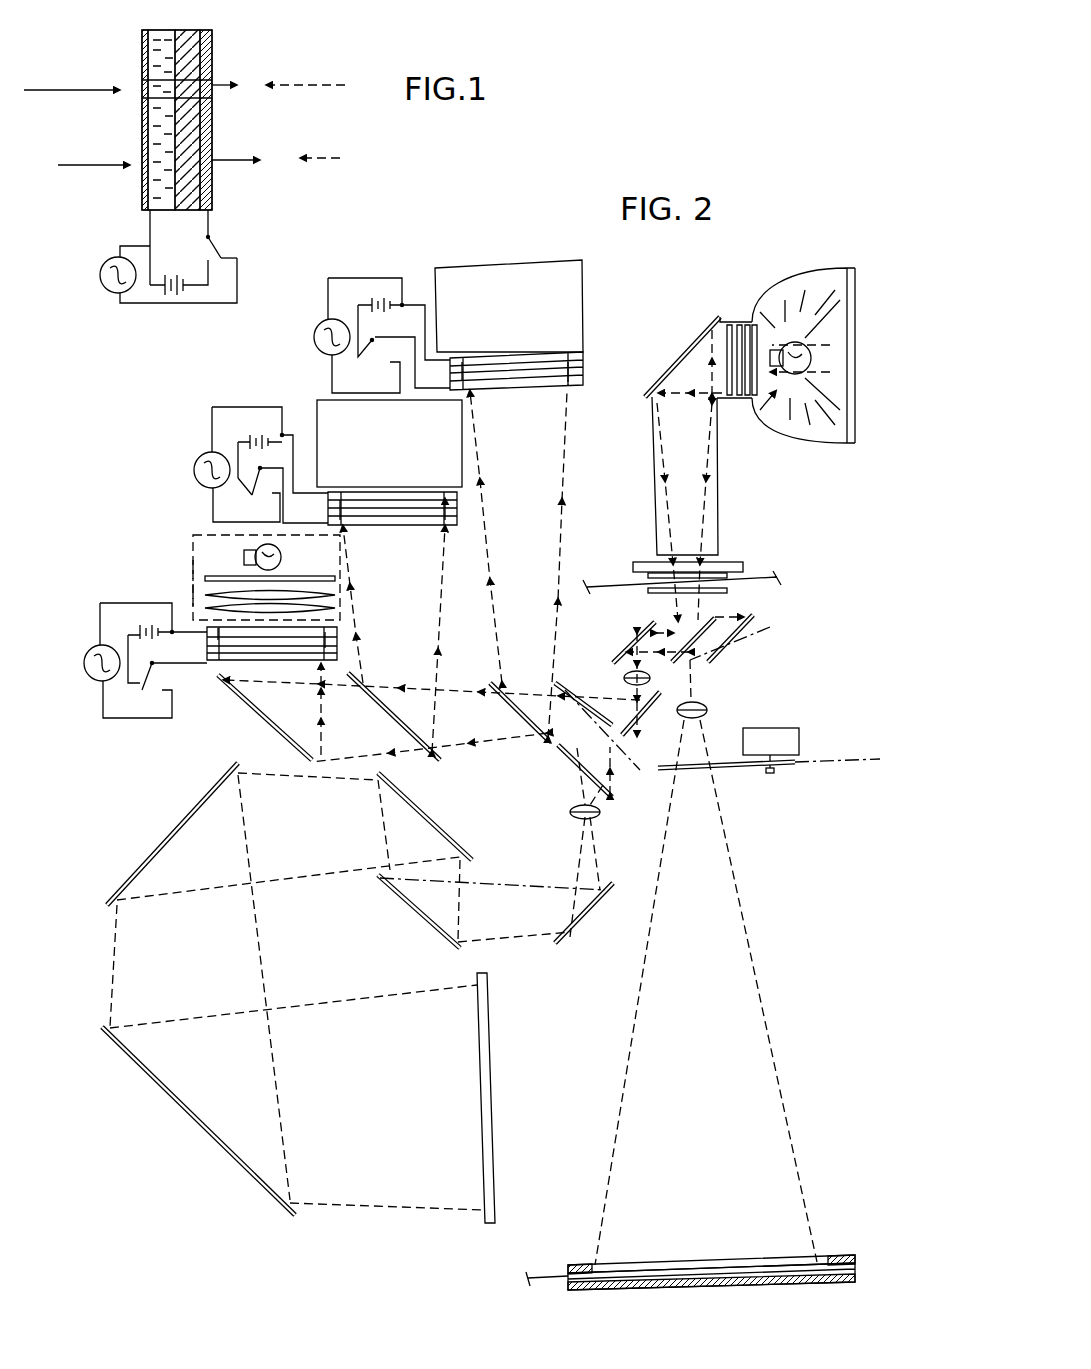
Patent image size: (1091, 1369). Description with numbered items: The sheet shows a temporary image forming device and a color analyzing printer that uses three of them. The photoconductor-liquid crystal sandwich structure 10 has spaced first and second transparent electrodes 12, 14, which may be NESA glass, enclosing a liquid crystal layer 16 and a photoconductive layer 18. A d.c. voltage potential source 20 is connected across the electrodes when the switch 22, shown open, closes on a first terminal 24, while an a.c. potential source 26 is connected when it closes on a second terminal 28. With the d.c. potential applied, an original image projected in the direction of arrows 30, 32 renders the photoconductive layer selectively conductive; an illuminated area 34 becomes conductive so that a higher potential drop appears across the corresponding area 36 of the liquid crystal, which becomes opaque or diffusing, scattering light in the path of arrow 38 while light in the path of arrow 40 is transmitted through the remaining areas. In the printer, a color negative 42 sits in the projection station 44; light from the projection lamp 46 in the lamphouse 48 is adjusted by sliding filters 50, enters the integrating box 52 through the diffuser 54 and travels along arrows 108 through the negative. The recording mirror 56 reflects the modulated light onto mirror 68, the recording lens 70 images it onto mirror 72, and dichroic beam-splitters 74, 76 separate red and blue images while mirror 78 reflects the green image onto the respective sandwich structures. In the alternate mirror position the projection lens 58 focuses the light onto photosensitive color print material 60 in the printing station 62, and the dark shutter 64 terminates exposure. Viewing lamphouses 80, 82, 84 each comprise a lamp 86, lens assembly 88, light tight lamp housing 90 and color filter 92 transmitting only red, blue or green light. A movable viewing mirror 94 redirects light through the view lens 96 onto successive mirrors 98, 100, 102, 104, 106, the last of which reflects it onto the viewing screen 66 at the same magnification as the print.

In FIG. 1, the photoconductor-liquid crystal sandwich structure 10 is at (199, 114).
In FIG. 2, the photoconductor-liquid crystal sandwich structure 10 is at (590, 370).
In FIG. 1, the first transparent electrode 12 is at (142, 44).
In FIG. 1, the second transparent electrode 14 is at (212, 40).
In FIG. 1, the liquid crystal layer 16 is at (148, 210).
In FIG. 1, the photoconductive layer 18 is at (206, 210).
In FIG. 1, the d.c. voltage potential source 20 is at (188, 270).
In FIG. 2, the d.c. voltage potential source 20 is at (372, 305).
In FIG. 1, the switch 22 is at (225, 255).
In FIG. 2, the switch 22 is at (376, 340).
In FIG. 1, the first terminal 24 is at (205, 245).
In FIG. 2, the first terminal 24 is at (345, 368).
In FIG. 1, the a.c. potential source 26 is at (100, 275).
In FIG. 2, the a.c. potential source 26 is at (314, 335).
In FIG. 1, the second terminal 28 is at (232, 262).
In FIG. 2, the second terminal 28 is at (385, 372).
In FIG. 1, the arrow 30 is at (330, 88).
In FIG. 1, the arrow 32 is at (335, 160).
In FIG. 1, the area 34 is at (212, 92).
In FIG. 1, the area 36 is at (142, 95).
In FIG. 1, the arrow 38 is at (48, 98).
In FIG. 1, the arrow 40 is at (85, 165).
In FIG. 2, the color negative 42 is at (760, 590).
In FIG. 2, the projection station 44 is at (762, 578).
In FIG. 2, the projection lamp 46 is at (812, 360).
In FIG. 2, the lamphouse 48 is at (820, 268).
In FIG. 2, the sliding filters 50 is at (750, 312).
In FIG. 2, the integrating box 52 is at (686, 346).
In FIG. 2, the diffuser 54 is at (733, 566).
In FIG. 2, the recording mirror 56 is at (700, 660).
In FIG. 2, the projection lens 58 is at (710, 712).
In FIG. 2, the photosensitive color print material 60 is at (566, 1272).
In FIG. 2, the printing station 62 is at (630, 1255).
In FIG. 2, the dark shutter 64 is at (740, 770).
In FIG. 2, the viewing screen 66 is at (492, 1135).
In FIG. 2, the mirror 68 is at (630, 646).
In FIG. 2, the recording lens 70 is at (630, 676).
In FIG. 2, the mirror 72 is at (636, 722).
In FIG. 2, the dichroic beam-splitter 74 is at (545, 742).
In FIG. 2, the dichroic beam-splitter 76 is at (420, 766).
In FIG. 2, the mirror 78 is at (262, 718).
In FIG. 2, the first viewing lamphouse 80 is at (530, 272).
In FIG. 2, the second viewing lamphouse 82 is at (322, 420).
In FIG. 2, the third viewing lamphouse 84 is at (198, 552).
In FIG. 2, the lamp 86 is at (283, 555).
In FIG. 2, the lens assembly 88 is at (203, 600).
In FIG. 2, the light tight lamp housing 90 is at (192, 573).
In FIG. 2, the color filter 92 is at (203, 578).
In FIG. 2, the viewing mirror 94 is at (615, 795).
In FIG. 2, the view lens 96 is at (575, 820).
In FIG. 2, the mirror 98 is at (585, 935).
In FIG. 2, the mirror 100 is at (425, 920).
In FIG. 2, the mirror 102 is at (437, 820).
In FIG. 2, the mirror 104 is at (175, 836).
In FIG. 2, the mirror 106 is at (205, 1130).
In FIG. 2, the arrows 108 is at (698, 465).